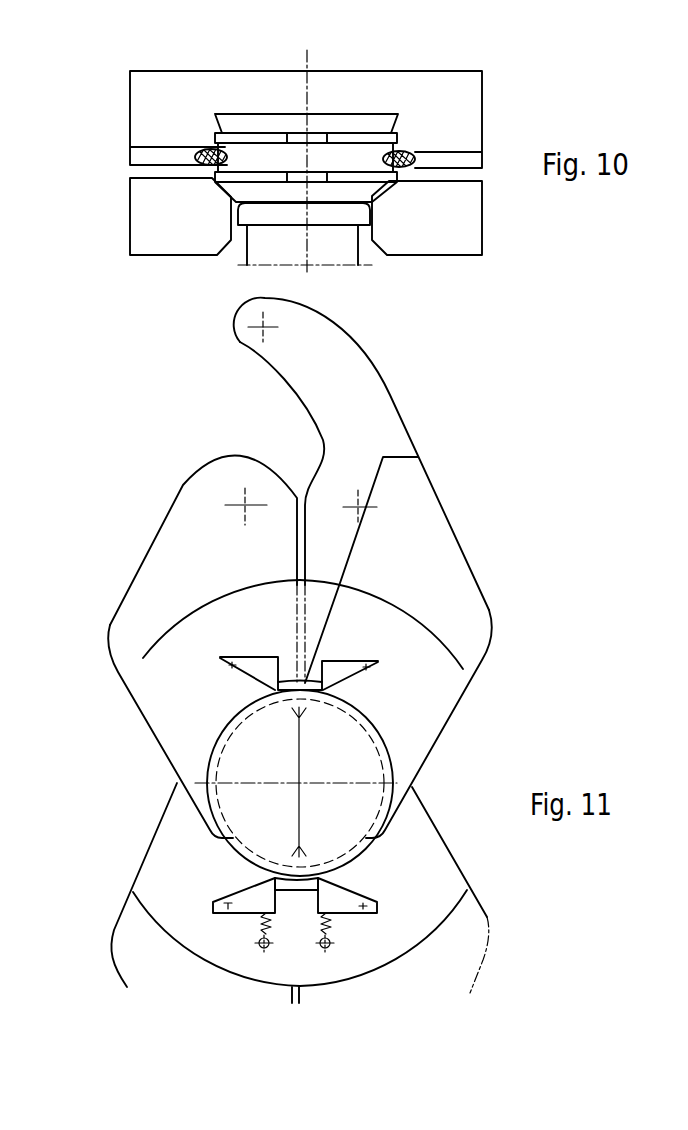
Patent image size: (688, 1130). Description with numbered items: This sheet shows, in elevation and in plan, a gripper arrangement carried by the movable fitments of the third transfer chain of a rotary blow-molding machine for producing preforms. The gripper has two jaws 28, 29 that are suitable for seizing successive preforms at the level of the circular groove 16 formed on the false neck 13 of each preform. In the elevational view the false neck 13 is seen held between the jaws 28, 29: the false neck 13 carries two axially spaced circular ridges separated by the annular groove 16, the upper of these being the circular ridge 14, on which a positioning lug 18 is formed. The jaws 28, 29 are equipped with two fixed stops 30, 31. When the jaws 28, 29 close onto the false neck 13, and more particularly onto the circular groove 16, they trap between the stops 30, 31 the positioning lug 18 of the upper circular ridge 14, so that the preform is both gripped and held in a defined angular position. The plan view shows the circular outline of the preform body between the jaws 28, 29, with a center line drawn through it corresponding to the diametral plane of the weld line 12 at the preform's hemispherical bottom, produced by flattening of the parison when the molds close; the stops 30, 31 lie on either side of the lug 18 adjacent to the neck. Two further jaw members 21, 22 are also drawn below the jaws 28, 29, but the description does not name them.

In FIG. 11, the weld line 12 is at (303, 753).
In FIG. 10, the false neck 13 is at (334, 125).
In FIG. 10, the upper circular ridge 14 is at (383, 139).
In FIG. 10, the annular groove 16 is at (234, 157).
In FIG. 11, the positioning lug 18 is at (418, 457).
In FIG. 10, the lower jaw (left) 21 is at (157, 238).
In FIG. 11, the lower jaw (left) 21 is at (178, 860).
In FIG. 10, the lower jaw (right) 22 is at (463, 222).
In FIG. 11, the lower jaw (right) 22 is at (417, 863).
In FIG. 10, the gripper jaw 28 is at (150, 96).
In FIG. 11, the gripper jaw 28 is at (183, 535).
In FIG. 10, the gripper jaw 29 is at (465, 101).
In FIG. 11, the gripper jaw 29 is at (417, 518).
In FIG. 11, the fixed stop 30 is at (357, 667).
In FIG. 11, the fixed stop 31 is at (243, 664).